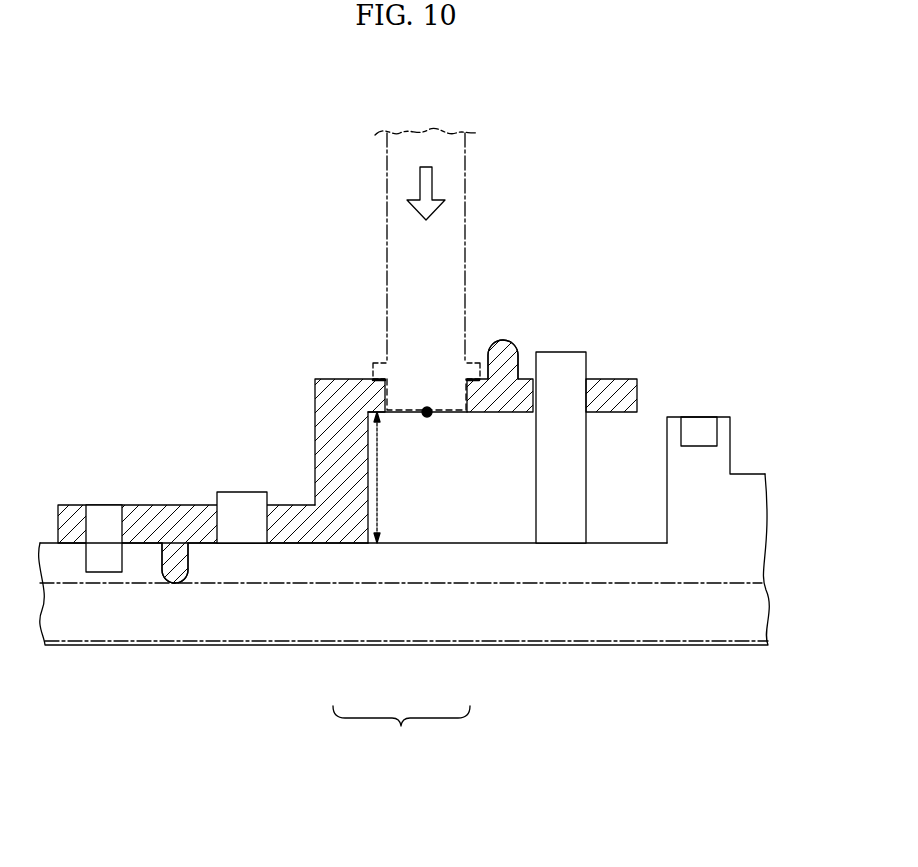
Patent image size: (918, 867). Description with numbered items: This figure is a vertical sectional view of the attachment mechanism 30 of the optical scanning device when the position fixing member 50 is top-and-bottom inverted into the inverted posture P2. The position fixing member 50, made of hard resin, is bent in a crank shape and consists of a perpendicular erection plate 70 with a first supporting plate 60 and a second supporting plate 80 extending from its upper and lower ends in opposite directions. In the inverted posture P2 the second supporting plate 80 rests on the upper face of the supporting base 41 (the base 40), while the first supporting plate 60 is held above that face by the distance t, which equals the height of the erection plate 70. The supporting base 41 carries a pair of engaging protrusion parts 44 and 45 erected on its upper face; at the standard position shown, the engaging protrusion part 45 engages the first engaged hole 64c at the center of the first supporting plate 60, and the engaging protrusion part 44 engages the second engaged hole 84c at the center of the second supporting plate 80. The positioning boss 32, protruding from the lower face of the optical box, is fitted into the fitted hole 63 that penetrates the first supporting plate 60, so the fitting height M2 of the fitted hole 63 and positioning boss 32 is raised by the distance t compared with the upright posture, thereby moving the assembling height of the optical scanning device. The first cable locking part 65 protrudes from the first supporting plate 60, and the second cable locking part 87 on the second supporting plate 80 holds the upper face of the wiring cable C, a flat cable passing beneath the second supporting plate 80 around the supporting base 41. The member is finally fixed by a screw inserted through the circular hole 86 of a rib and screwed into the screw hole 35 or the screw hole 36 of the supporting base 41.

The attachment mechanism 30 is at (466, 757).
The positioning boss 32 is at (387, 160).
The screw hole 35 is at (697, 425).
The screw hole 36 is at (93, 558).
The supporting base 40 is at (404, 613).
The supporting base 41 is at (528, 647).
The engaging protrusion part 44 is at (243, 500).
The engaging protrusion part 45 is at (563, 365).
The position fixing member 50 is at (401, 729).
The first supporting plate 60 is at (482, 412).
The fitted hole 63 is at (387, 365).
The first engaged hole 64c is at (588, 380).
The first cable locking part 65 is at (502, 346).
The erection plate 70 is at (343, 493).
The second supporting plate 80 is at (297, 543).
The second engaged hole 84c is at (219, 498).
The circular hole 86 is at (103, 498).
The second cable locking part 87 is at (188, 567).
The fitting height M2 is at (427, 407).
The inverted posture P2 is at (231, 354).
The wiring cable C is at (710, 583).
The distance t is at (382, 477).